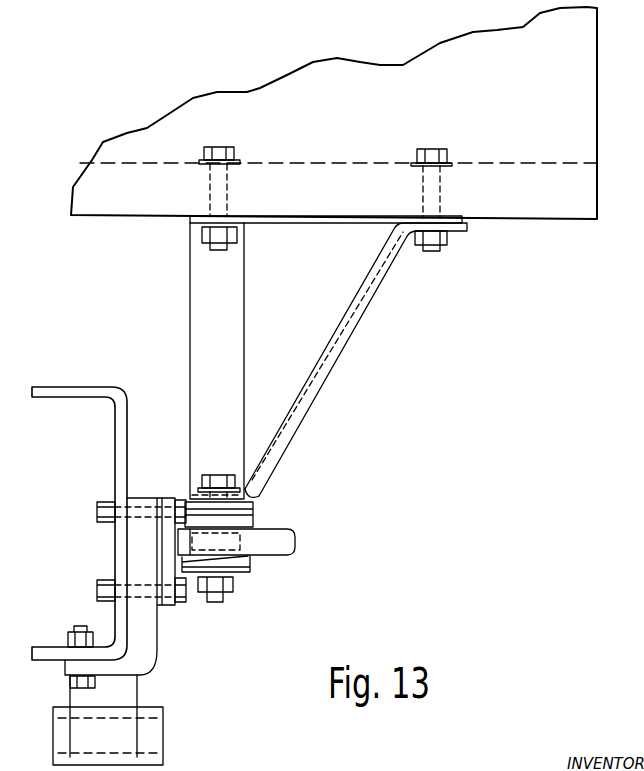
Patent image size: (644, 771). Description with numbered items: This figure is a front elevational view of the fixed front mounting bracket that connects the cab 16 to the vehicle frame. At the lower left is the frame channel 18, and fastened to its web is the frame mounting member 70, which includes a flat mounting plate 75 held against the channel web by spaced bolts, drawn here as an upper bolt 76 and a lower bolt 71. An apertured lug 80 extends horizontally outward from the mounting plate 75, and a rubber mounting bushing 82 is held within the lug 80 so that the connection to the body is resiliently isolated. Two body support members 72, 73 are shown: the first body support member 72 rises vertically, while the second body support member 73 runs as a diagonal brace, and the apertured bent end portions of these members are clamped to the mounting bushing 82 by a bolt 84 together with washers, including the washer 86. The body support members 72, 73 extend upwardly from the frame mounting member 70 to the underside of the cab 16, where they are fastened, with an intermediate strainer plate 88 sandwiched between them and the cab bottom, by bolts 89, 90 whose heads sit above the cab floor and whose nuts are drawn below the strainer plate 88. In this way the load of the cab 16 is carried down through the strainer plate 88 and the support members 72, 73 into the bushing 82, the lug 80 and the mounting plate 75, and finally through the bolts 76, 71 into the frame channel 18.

The cab 16 is at (549, 116).
The frame channel 18 is at (122, 428).
The frame mounting member 70 is at (245, 580).
The lower bolt 71 is at (133, 600).
The body support member 72 is at (190, 314).
The body support member 73 is at (340, 316).
The flat mounting plate 75 is at (167, 606).
The bolt 76 is at (137, 523).
The lug 80 is at (297, 546).
The rubber mounting bushing 82 is at (253, 517).
The bolt 84 is at (212, 474).
The washer 86 is at (250, 566).
The strainer plate 88 is at (333, 224).
The bolt 89 is at (226, 147).
The bolt 90 is at (437, 150).